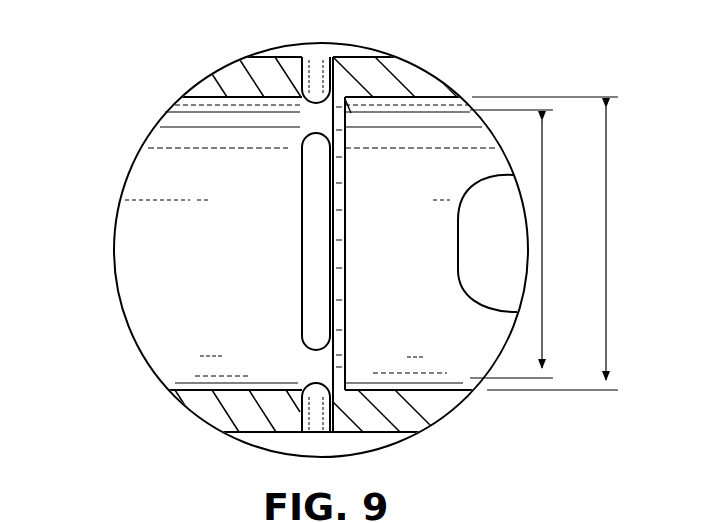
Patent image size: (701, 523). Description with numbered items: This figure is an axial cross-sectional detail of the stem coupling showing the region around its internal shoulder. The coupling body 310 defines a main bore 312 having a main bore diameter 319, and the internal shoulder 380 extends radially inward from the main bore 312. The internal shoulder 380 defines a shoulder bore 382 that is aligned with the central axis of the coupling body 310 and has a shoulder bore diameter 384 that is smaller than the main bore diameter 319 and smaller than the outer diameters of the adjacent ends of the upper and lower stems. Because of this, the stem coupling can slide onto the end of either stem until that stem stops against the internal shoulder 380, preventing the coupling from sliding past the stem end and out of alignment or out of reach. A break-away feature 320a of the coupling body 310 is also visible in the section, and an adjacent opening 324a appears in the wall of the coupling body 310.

The coupling body 310 is at (377, 433).
The main bore 312 is at (141, 214).
The main bore diameter 319 is at (648, 273).
The break-away feature 320a is at (302, 230).
The aperture 324a is at (457, 270).
The internal shoulder 380 is at (347, 300).
The shoulder bore 382 is at (349, 106).
The shoulder bore diameter 384 is at (543, 218).